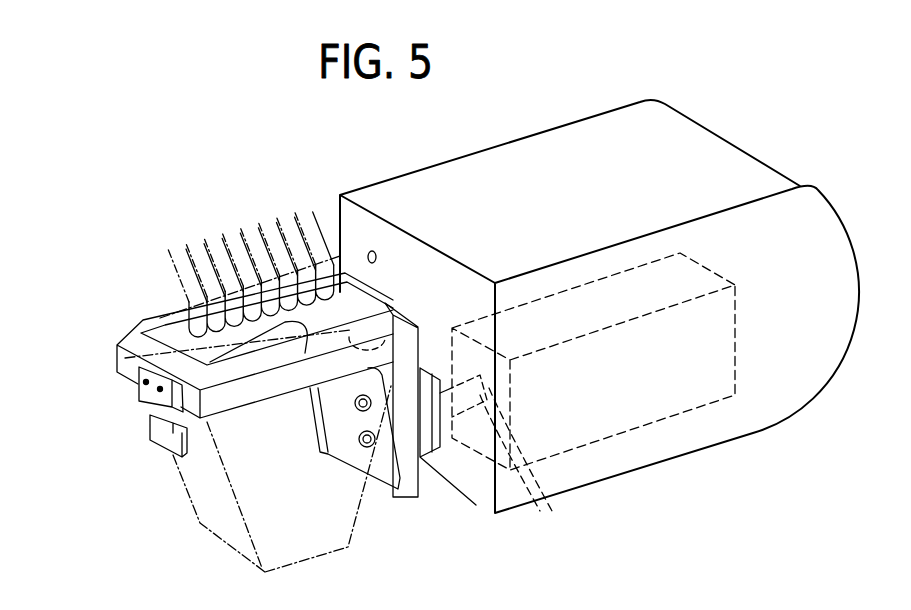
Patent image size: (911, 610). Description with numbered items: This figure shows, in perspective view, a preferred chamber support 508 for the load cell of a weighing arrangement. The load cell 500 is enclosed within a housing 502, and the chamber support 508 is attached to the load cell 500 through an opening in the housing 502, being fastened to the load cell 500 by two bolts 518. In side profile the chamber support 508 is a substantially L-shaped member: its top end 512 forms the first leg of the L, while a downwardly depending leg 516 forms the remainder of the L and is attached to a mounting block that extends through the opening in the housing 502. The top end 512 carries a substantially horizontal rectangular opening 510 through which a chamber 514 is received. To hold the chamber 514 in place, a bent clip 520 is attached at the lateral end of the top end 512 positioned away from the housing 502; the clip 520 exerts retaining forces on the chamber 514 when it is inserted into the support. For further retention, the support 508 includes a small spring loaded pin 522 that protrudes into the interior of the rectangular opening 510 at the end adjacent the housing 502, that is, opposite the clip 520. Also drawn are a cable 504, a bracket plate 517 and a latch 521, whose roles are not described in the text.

The load cell 500 is at (685, 411).
The housing 502 is at (487, 149).
The cable 504 is at (539, 498).
The chamber support 508 is at (441, 448).
The rectangular opening 510 is at (142, 338).
The top end 512 is at (117, 345).
The chamber 514 is at (210, 499).
The downwardly depending leg 516 is at (407, 446).
The bracket plate 517 is at (427, 435).
The bolts 518 is at (363, 448).
The bent clip 520 is at (170, 438).
The latch 521 is at (159, 390).
The spring loaded pin 522 is at (337, 268).